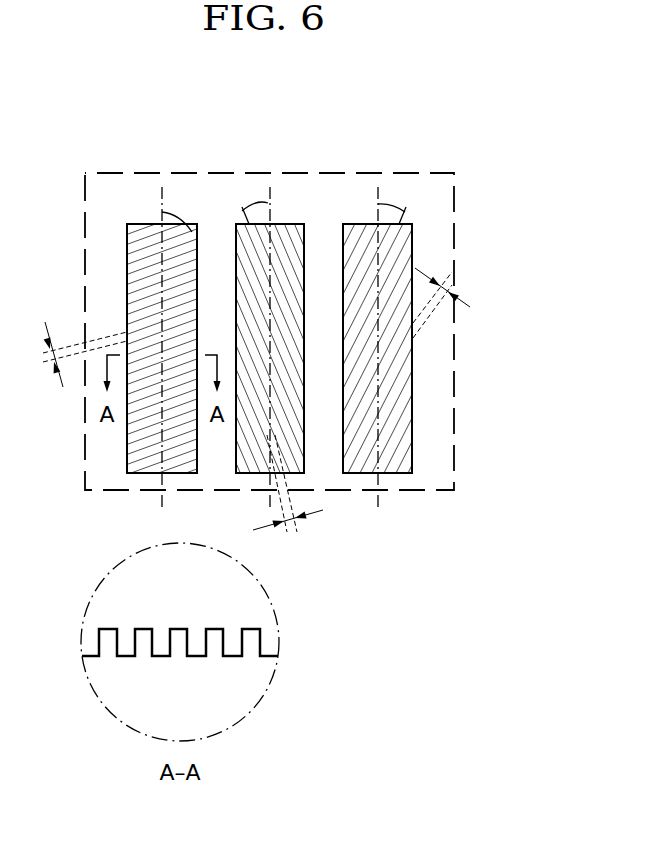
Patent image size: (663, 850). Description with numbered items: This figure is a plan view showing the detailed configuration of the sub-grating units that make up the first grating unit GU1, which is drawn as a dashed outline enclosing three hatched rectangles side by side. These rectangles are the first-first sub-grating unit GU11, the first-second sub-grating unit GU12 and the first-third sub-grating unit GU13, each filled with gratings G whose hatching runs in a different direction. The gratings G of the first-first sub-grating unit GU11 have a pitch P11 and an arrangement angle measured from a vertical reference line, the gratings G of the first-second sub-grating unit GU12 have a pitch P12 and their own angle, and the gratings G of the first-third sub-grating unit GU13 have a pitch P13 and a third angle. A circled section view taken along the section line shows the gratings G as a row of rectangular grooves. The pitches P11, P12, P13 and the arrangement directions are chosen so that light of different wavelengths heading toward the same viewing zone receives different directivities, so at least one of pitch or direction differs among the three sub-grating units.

The first grating unit GU1 is at (455, 238).
The first-first sub-grating unit GU11 is at (143, 223).
The first-second sub-grating unit GU12 is at (283, 223).
The first-third sub-grating unit GU13 is at (358, 223).
The pitch of first-first sub-grating unit P11 is at (70, 354).
The pitch of first-second sub-grating unit P12 is at (288, 498).
The pitch of first-third sub-grating unit P13 is at (451, 301).
The gratings G is at (145, 629).